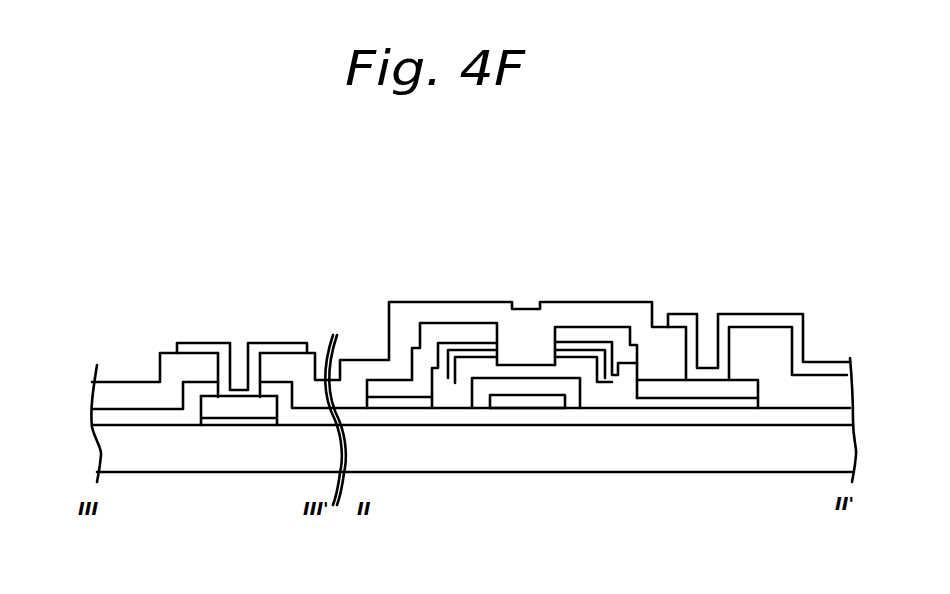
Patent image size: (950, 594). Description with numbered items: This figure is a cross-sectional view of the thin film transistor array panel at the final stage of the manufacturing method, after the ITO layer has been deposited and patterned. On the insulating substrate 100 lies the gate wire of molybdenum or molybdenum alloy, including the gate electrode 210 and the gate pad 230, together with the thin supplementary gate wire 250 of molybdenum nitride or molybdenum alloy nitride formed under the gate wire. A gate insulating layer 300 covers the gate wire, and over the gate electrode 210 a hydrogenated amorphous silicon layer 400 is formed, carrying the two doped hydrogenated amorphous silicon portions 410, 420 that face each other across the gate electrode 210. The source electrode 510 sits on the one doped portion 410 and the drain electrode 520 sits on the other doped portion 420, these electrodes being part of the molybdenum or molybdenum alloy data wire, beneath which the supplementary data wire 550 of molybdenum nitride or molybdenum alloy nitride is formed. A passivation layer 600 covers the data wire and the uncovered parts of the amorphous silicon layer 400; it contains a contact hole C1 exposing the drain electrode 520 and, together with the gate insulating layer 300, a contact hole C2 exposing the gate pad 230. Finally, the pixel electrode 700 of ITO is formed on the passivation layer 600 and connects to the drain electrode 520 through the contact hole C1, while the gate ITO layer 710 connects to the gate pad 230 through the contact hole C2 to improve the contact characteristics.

The insulating substrate 100 is at (847, 450).
The gate electrode 210 is at (546, 408).
The gate pad 230 is at (253, 408).
The supplementary gate wire 250 is at (213, 425).
The gate insulating layer 300 is at (847, 410).
The hydrogenated amorphous silicon layer 400 is at (593, 402).
The doped hydrogenated amorphous silicon layer portion 410 is at (477, 355).
The doped hydrogenated amorphous silicon layer portion 420 is at (573, 342).
The source electrode 510 is at (435, 330).
The drain electrode 520 is at (625, 333).
The supplementary data wire 550 is at (395, 408).
The passivation layer 600 is at (838, 382).
The pixel electrode 700 is at (772, 318).
The gate ITO layer 710 is at (197, 343).
The contact hole C1 is at (707, 300).
The contact hole C2 is at (239, 320).